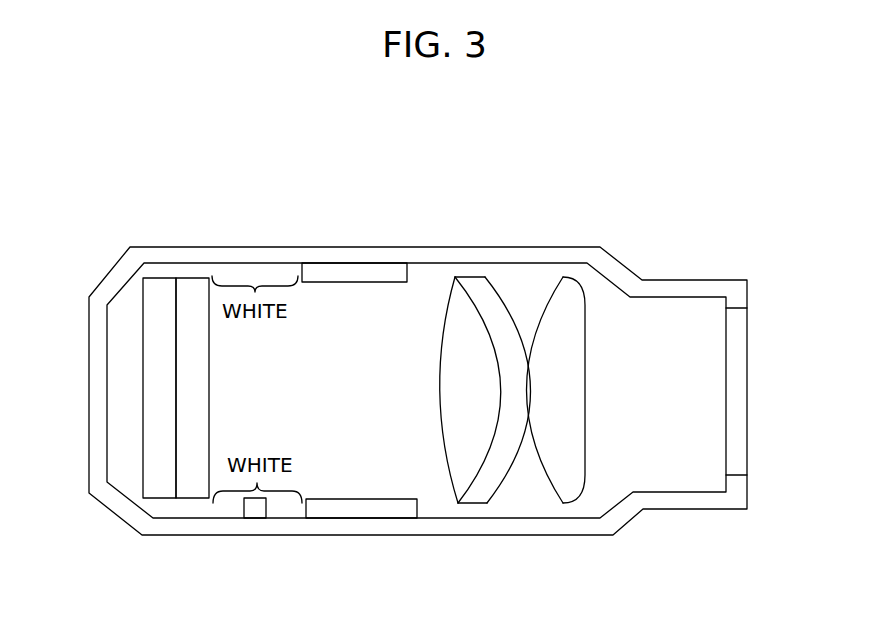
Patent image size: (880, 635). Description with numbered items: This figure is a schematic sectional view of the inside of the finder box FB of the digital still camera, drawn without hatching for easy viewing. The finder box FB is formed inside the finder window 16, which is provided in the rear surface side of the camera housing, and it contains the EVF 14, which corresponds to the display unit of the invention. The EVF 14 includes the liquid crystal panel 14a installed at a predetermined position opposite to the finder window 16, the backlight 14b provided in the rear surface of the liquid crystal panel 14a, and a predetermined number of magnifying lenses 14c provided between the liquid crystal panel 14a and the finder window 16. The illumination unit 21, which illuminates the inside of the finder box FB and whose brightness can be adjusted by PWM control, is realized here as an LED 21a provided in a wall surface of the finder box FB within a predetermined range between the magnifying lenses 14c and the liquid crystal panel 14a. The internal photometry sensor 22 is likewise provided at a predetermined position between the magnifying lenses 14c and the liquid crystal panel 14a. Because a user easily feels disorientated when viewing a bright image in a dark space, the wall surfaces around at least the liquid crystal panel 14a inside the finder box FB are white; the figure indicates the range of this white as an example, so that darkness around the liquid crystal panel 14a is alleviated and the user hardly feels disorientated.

The EVF 14 is at (316, 404).
The liquid crystal panel 14a is at (185, 420).
The backlight 14b is at (147, 341).
The magnifying lenses 14c is at (458, 490).
The finder window 16 is at (732, 310).
The illumination unit 21 is at (362, 395).
The LED 21a is at (358, 272).
The internal photometry sensor 22 is at (255, 513).
The finder box FB is at (680, 483).